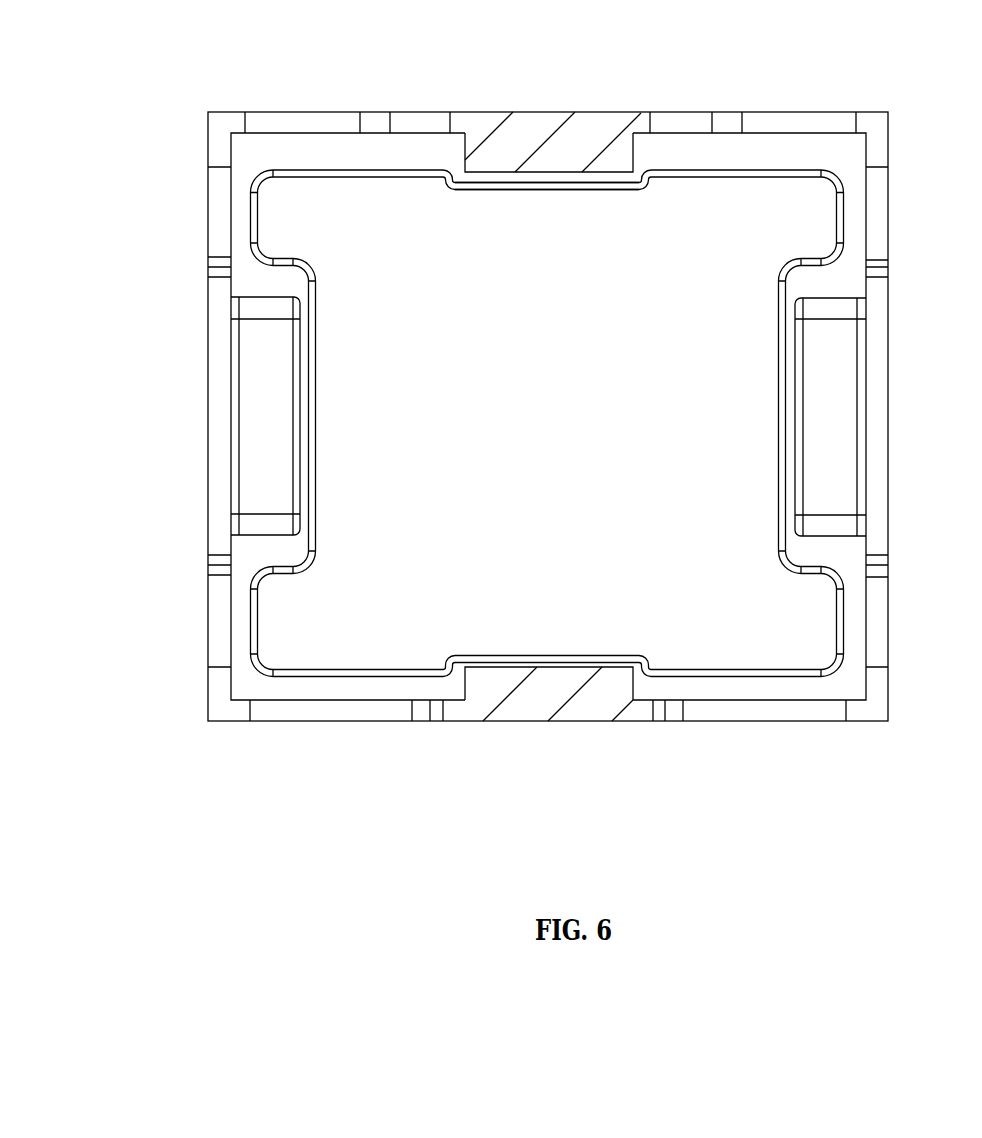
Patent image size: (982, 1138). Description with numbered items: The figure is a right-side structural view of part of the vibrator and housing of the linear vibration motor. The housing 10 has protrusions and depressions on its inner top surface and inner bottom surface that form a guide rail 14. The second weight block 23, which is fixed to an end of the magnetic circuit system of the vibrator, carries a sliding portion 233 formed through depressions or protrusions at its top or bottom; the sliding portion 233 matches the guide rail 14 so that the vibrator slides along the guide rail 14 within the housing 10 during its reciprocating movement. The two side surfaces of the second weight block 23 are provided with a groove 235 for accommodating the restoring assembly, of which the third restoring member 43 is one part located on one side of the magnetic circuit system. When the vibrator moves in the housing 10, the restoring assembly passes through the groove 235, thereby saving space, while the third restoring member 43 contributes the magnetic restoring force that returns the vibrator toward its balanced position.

The housing 10 is at (763, 120).
The guide rail 14 is at (633, 163).
The second weight block 23 is at (430, 520).
The third restoring member 43 is at (262, 391).
The sliding portion 233 is at (508, 180).
The groove 235 is at (325, 498).